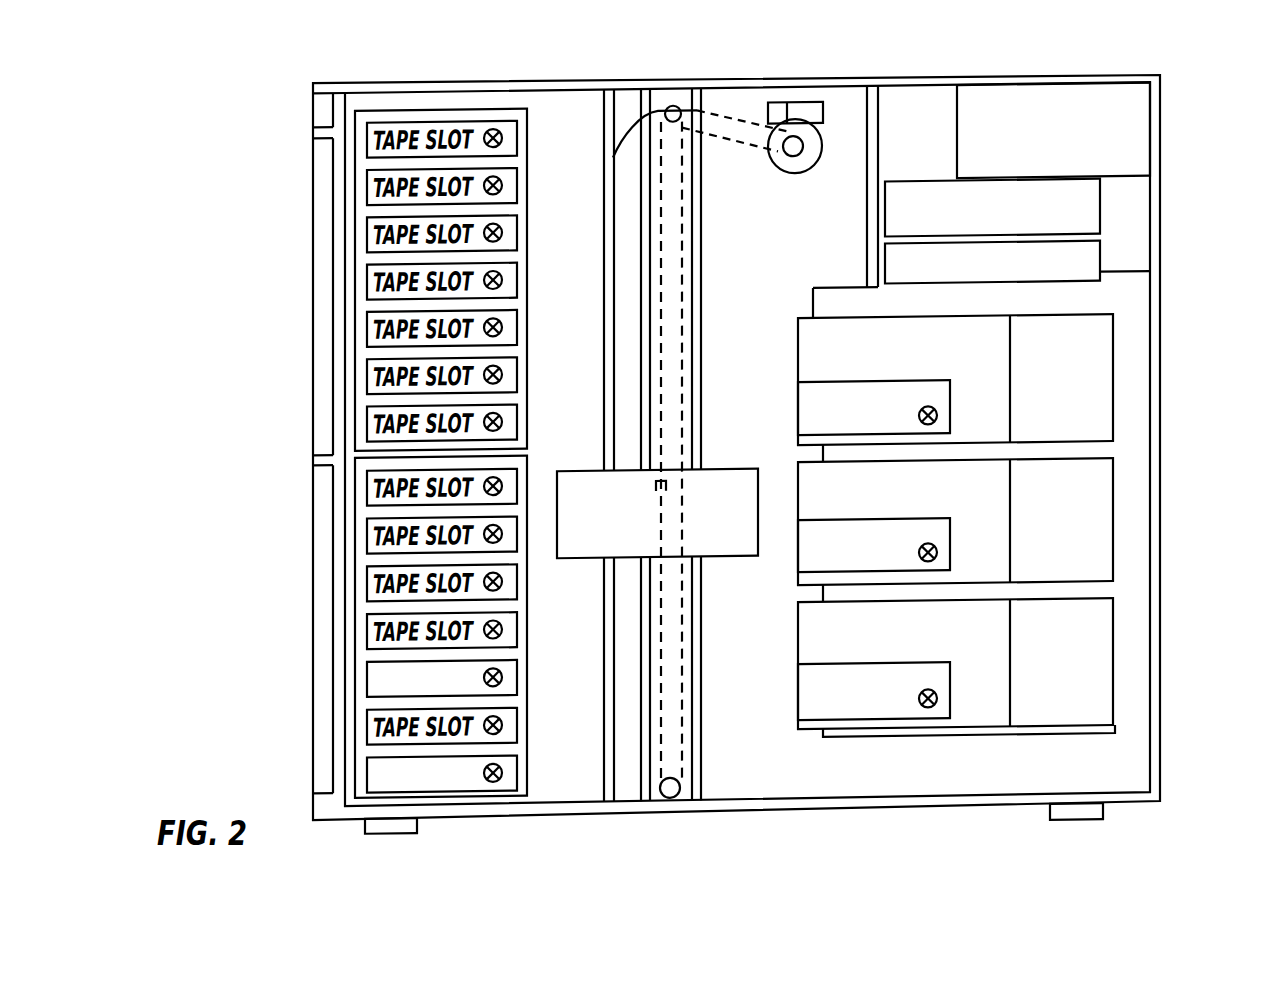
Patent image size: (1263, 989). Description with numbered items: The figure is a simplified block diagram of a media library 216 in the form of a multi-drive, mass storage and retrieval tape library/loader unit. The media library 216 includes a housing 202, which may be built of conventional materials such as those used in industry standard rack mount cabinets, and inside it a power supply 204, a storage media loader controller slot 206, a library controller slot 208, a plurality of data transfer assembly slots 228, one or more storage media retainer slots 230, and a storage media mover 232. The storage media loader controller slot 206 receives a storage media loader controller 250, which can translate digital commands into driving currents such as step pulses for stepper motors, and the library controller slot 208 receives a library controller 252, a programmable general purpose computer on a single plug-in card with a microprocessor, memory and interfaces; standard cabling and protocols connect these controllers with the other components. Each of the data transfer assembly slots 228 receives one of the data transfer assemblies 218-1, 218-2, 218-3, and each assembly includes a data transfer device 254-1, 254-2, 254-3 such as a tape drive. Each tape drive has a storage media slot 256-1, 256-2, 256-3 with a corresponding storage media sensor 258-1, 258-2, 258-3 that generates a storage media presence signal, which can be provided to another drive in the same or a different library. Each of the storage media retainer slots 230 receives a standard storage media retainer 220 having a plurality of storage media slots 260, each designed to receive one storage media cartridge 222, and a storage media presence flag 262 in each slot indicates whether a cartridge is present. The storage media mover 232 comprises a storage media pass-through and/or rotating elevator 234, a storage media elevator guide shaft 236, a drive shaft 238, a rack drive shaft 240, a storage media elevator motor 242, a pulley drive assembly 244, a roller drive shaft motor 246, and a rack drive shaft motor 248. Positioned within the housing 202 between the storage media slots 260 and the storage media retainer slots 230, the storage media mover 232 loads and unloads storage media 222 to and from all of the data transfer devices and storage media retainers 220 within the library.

The housing 202 is at (883, 78).
The power supply 204 is at (1151, 158).
The storage media loader controller slot 206 is at (1101, 219).
The library controller slot 208 is at (1101, 264).
The media library 216 is at (245, 455).
The data transfer assembly 218-1 is at (960, 379).
The data transfer assembly 218-2 is at (960, 521).
The data transfer assembly 218-3 is at (960, 663).
The storage media retainer 220 is at (477, 665).
The storage media cartridge 222 is at (511, 661).
The data transfer assembly slot 228 is at (1006, 525).
The storage media retainer slot 230 is at (477, 454).
The storage media mover 232 is at (703, 444).
The storage media pass-through and/or rotating elevator 234 is at (736, 558).
The storage media elevator guide shaft 236 is at (641, 306).
The drive shaft 238 is at (603, 271).
The rack drive shaft 240 is at (703, 324).
The storage media elevator motor 242 is at (783, 166).
The pulley drive assembly 244 is at (607, 155).
The roller drive shaft motor 246 is at (788, 128).
The rack drive shaft motor 248 is at (768, 113).
The storage media loader controller 250 is at (898, 195).
The library controller 252 is at (866, 253).
The data transfer device 254-1 is at (1000, 393).
The data transfer device 254-2 is at (1000, 530).
The data transfer device 254-3 is at (1000, 678).
The storage media slot 256-1 is at (848, 382).
The storage media slot 256-2 is at (848, 525).
The storage media slot 256-3 is at (848, 670).
The storage media sensor 258-1 is at (938, 418).
The storage media sensor 258-2 is at (938, 555).
The storage media sensor 258-3 is at (938, 701).
The storage media slot 260 is at (481, 752).
The storage media presence flag 262 is at (512, 771).